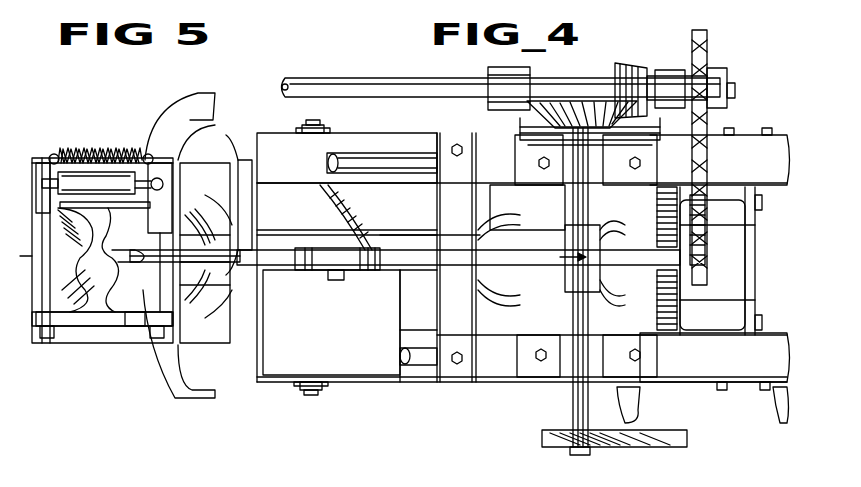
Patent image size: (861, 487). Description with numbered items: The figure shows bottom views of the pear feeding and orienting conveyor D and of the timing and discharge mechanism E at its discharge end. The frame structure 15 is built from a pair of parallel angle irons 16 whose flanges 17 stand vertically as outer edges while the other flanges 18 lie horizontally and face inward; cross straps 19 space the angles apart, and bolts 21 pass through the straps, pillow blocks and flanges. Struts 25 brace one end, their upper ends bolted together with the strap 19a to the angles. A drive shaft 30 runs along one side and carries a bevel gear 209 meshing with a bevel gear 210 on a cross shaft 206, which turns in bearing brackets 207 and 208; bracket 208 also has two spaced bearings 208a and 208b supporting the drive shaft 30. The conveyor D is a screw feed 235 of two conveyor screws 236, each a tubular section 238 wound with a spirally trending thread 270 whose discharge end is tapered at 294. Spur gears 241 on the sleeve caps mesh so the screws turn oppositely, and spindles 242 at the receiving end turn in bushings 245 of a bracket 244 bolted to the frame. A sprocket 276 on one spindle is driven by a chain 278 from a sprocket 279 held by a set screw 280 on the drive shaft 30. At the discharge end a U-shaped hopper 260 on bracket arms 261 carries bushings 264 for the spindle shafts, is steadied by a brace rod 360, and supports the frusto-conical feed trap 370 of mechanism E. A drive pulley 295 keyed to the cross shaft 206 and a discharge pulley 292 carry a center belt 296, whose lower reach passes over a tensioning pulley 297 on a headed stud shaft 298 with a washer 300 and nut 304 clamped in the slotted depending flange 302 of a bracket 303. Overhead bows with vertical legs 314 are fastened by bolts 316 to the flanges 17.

In FIG. 4, the frame structure 15 is at (778, 158).
In FIG. 4, the angle irons 16 is at (286, 149).
In FIG. 4, the flanges 17 is at (438, 141).
In FIG. 4, the flanges 18 is at (757, 180).
In FIG. 4, the cross straps 19 is at (486, 190).
In FIG. 4, the strap 19a is at (470, 324).
In FIG. 4, the bolts 21 is at (455, 378).
In FIG. 4, the struts 25 is at (380, 160).
In FIG. 4, the drive shaft 30 is at (360, 91).
In FIG. 4, the feeding and orienting conveyor D is at (428, 160).
In FIG. 5, the timing and discharge mechanism E is at (130, 326).
In FIG. 4, the cross shaft 206 is at (573, 306).
In FIG. 4, the bearing bracket 207 is at (645, 374).
In FIG. 4, the bearing bracket 208 is at (566, 188).
In FIG. 4, the bearing 208a is at (512, 77).
In FIG. 4, the bearing 208b is at (670, 86).
In FIG. 4, the bevel gear 209 is at (632, 66).
In FIG. 4, the bevel gear 210 is at (540, 118).
In FIG. 4, the screw feed 235 is at (428, 274).
In FIG. 4, the conveyor screws 236 is at (320, 205).
In FIG. 5, the tubular section 238 is at (211, 153).
In FIG. 4, the tubular section 238 is at (241, 166).
In FIG. 4, the spur gear 241 is at (660, 206).
In FIG. 4, the spindle 242 is at (763, 204).
In FIG. 4, the bracket 244 is at (740, 270).
In FIG. 4, the bushings 245 is at (756, 226).
In FIG. 5, the U-shaped hopper 260 is at (72, 313).
In FIG. 5, the bracket arms 261 is at (178, 125).
In FIG. 5, the bushings 264 is at (135, 330).
In FIG. 5, the spirally trending thread 270 is at (216, 216).
In FIG. 4, the spirally trending thread 270 is at (352, 211).
In FIG. 4, the sprocket 276 is at (706, 252).
In FIG. 4, the chain 278 is at (706, 130).
In FIG. 4, the sprocket 279 is at (706, 60).
In FIG. 4, the set screw 280 is at (728, 80).
In FIG. 5, the discharge pulley 292 is at (222, 256).
In FIG. 5, the tapered ends 294 is at (187, 228).
In FIG. 4, the drive pulley 295 is at (600, 282).
In FIG. 5, the center belt 296 is at (222, 261).
In FIG. 4, the center belt 296 is at (476, 256).
In FIG. 4, the tensioning pulley 297 is at (385, 250).
In FIG. 4, the headed stud shaft 298 is at (332, 221).
In FIG. 4, the washer 300 is at (325, 271).
In FIG. 4, the depending flange 302 is at (346, 272).
In FIG. 4, the bracket 303 is at (348, 345).
In FIG. 4, the nut 304 is at (335, 280).
In FIG. 4, the vertical legs 314 is at (330, 130).
In FIG. 4, the bolts 316 is at (312, 127).
In FIG. 5, the brace rod 360 is at (36, 257).
In FIG. 5, the feed trap 370 is at (68, 257).